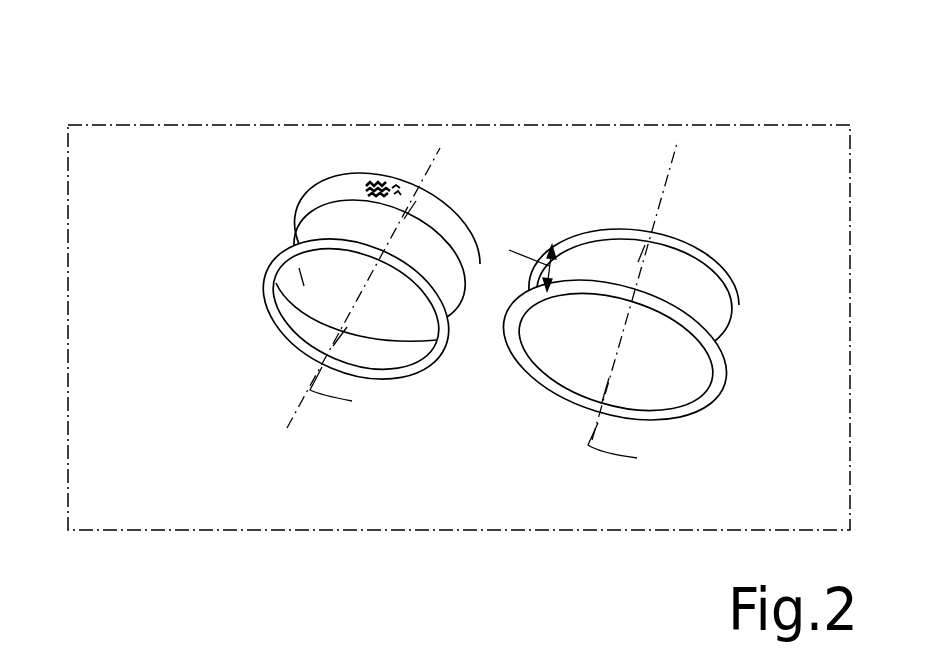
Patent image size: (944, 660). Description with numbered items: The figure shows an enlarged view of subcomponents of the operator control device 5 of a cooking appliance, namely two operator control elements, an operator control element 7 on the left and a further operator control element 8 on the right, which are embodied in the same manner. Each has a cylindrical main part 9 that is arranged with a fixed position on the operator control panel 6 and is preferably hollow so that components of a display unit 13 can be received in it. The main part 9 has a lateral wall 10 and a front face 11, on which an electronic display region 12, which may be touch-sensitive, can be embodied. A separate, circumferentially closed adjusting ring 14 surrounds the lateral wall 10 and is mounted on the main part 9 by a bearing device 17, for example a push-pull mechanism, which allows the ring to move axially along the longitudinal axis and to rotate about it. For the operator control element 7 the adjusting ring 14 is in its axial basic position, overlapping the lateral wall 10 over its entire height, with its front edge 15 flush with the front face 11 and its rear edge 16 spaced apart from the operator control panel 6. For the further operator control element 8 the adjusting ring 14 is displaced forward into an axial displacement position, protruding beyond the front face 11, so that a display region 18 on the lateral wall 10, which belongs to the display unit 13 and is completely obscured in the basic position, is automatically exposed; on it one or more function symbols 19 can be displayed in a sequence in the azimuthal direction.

The operator control device 5 is at (542, 183).
The operator control panel 6 is at (694, 164).
The operator control element 7 is at (720, 232).
The further operator control element 8 is at (337, 168).
The cylindrical main part 9 is at (462, 200).
The lateral wall 10 is at (341, 194).
The front face 11 is at (287, 305).
The electronic display region 12 is at (585, 363).
The display unit 13 is at (589, 224).
The adjusting ring 14 is at (278, 236).
The front edge 15 is at (480, 264).
The rear edge 16 is at (615, 240).
The bearing device 17 is at (743, 281).
The display region 18 is at (381, 166).
The function symbol 19 is at (383, 193).